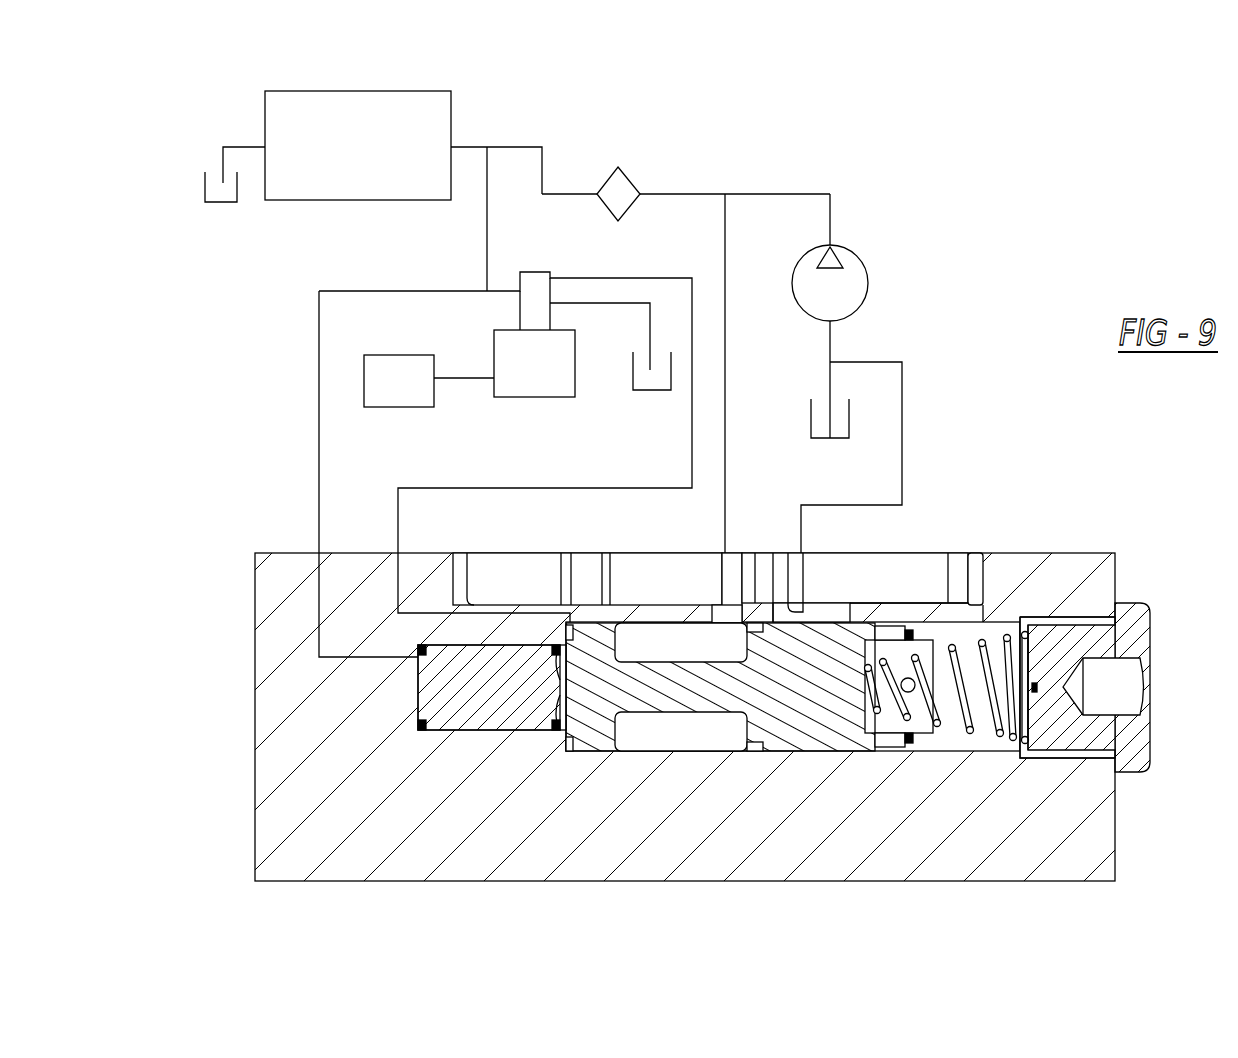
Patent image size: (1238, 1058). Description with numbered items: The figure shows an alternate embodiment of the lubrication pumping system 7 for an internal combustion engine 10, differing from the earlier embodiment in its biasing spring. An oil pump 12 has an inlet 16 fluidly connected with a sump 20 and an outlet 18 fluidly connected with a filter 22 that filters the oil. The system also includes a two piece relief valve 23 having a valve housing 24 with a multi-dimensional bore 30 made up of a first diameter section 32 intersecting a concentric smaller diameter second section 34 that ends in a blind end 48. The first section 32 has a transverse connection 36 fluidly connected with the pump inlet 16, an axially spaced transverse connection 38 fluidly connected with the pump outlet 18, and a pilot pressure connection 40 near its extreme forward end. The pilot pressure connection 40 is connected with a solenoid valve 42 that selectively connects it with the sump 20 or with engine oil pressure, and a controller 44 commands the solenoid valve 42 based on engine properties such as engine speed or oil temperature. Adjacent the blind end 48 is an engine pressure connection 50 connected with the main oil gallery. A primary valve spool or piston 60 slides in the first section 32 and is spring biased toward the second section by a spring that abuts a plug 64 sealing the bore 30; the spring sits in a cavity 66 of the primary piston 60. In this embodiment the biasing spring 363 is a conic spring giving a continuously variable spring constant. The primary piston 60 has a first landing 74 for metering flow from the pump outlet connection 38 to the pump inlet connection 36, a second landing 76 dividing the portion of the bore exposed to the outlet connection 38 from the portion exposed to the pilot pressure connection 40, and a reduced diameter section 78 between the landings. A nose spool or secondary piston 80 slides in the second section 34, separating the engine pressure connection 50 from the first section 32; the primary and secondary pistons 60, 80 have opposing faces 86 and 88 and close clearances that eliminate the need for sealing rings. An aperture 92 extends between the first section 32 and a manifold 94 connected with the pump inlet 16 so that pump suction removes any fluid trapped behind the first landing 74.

The lubrication pumping system 7 is at (848, 151).
The internal combustion engine 10 is at (300, 200).
The oil pump 12 is at (868, 274).
The pump inlet 16 is at (835, 321).
The pump outlet 18 is at (831, 244).
The sump 20 is at (204, 188).
The filter 22 is at (630, 172).
The two piece relief valve 23 is at (948, 553).
The valve housing 24 is at (1115, 567).
The multi-dimensional bore 30 is at (965, 744).
The first diameter section 32 is at (693, 745).
The second section 34 is at (510, 720).
The transverse connection 36 is at (812, 607).
The transverse connection 38 is at (735, 623).
The pilot pressure connection 40 is at (577, 625).
The solenoid valve 42 is at (494, 337).
The controller 44 is at (404, 407).
The blind end 48 is at (426, 728).
The engine pressure connection 50 is at (418, 655).
The primary valve spool or piston 60 is at (748, 748).
The plug 64 is at (1138, 607).
The cavity 66 is at (880, 722).
The first landing 74 is at (845, 603).
The second landing 76 is at (594, 753).
The reduced diameter section 78 is at (662, 753).
The nose spool or secondary piston 80 is at (453, 720).
The face of primary piston 86 is at (572, 728).
The face of secondary piston 88 is at (560, 722).
The aperture 92 is at (980, 613).
The manifold 94 is at (973, 552).
The spring end coil 363 is at (998, 738).